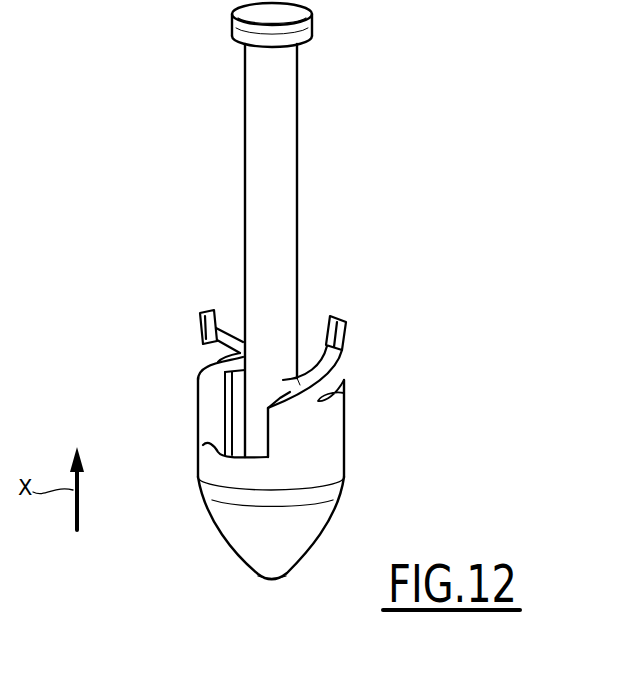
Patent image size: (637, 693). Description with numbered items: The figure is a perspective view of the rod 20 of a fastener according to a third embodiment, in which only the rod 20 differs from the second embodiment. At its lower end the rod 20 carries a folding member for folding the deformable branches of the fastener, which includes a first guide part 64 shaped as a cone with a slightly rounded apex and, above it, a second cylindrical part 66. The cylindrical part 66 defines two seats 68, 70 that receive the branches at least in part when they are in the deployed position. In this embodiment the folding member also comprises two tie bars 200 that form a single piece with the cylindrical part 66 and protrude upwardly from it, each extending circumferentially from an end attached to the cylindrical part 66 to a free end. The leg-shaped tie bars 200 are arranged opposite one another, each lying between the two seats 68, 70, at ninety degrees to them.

The rod 20 is at (282, 165).
The first guide part 64 is at (298, 543).
The second cylindrical part 66 is at (330, 452).
The seat 68 is at (312, 322).
The seat 70 is at (218, 410).
The tie bars 200 is at (199, 325).